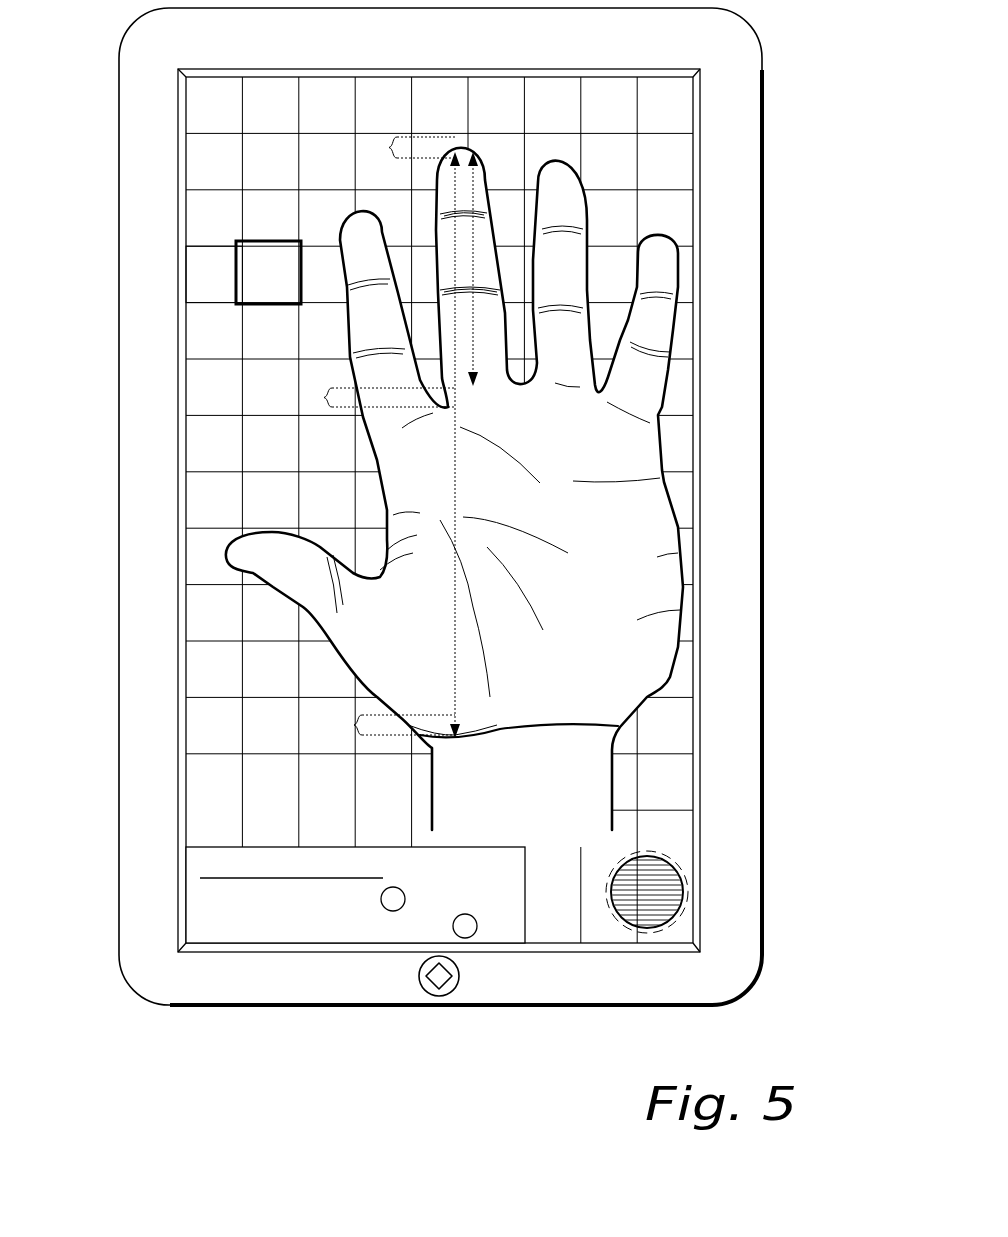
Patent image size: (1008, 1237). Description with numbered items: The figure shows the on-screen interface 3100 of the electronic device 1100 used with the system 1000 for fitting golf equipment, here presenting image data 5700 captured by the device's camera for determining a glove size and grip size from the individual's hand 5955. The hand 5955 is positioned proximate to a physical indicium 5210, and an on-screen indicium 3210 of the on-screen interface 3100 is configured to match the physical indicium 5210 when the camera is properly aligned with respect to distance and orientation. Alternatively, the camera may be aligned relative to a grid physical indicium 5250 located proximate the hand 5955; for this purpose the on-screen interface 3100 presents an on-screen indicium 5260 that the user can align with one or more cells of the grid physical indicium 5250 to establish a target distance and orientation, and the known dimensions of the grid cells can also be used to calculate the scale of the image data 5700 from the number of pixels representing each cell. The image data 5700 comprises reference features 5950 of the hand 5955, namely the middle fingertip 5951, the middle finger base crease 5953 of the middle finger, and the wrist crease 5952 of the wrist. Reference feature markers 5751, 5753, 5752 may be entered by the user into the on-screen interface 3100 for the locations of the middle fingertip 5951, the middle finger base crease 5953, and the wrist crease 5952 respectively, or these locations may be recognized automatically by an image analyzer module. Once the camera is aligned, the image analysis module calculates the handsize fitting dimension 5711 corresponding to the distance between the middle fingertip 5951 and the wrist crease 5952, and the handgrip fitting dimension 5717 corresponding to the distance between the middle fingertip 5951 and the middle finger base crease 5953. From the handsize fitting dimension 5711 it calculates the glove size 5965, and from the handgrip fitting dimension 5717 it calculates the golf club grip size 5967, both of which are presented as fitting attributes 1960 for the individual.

The system 1000 is at (858, 1041).
The electronic device 1100 is at (305, 993).
The on-screen interface 3100 is at (663, 164).
The image data 5700 is at (676, 217).
The grid physical indicium 5250 is at (212, 302).
The on-screen indicium 5260 is at (268, 240).
The handsize fitting dimension 5711 is at (454, 497).
The handgrip fitting dimension 5717 is at (473, 187).
The hand 5955 is at (660, 556).
The wrist crease 5952 is at (522, 722).
The middle fingertip 5951 is at (462, 148).
The reference features 5950 is at (471, 146).
The middle finger base crease 5953 is at (468, 392).
The reference feature marker 5751 is at (396, 149).
The reference feature marker 5753 is at (364, 398).
The reference feature marker 5752 is at (379, 726).
The fitting attributes 1960 is at (213, 845).
The glove size 5965 is at (200, 897).
The golf club grip size 5967 is at (203, 935).
The physical indicium 5210 is at (633, 904).
The on-screen indicium 3210 is at (617, 866).